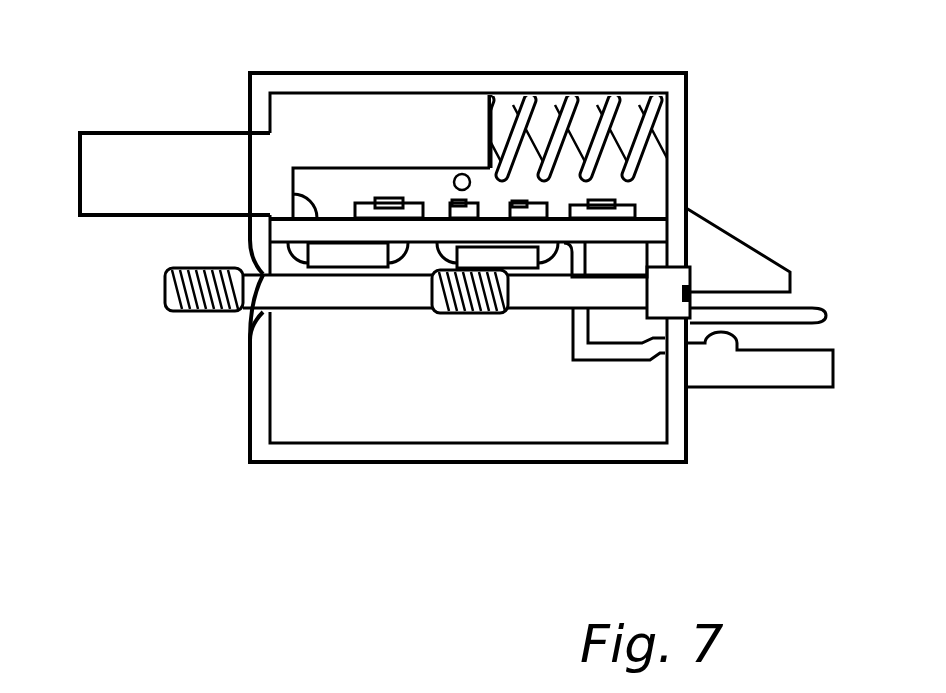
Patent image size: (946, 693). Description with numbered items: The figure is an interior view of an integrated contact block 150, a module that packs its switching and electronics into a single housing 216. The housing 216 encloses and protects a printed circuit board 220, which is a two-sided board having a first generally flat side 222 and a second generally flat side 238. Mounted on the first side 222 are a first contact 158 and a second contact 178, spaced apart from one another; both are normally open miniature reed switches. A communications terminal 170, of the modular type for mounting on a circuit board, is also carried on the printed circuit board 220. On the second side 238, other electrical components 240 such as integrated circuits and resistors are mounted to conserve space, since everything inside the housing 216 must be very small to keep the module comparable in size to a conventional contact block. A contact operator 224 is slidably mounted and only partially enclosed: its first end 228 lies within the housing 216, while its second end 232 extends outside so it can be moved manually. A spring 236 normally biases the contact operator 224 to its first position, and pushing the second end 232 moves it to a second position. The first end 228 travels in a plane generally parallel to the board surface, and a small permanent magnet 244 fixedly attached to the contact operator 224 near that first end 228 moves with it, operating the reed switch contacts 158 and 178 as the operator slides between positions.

The integrated contact block 150 is at (338, 463).
The first contact 158 is at (452, 209).
The communications terminal 170 is at (818, 316).
The second contact 178 is at (585, 257).
The housing 216 is at (517, 453).
The printed circuit board 220 is at (652, 222).
The first generally flat side 222 is at (293, 190).
The contact operator 224 is at (149, 133).
The first end 228 is at (488, 123).
The second end 232 is at (78, 187).
The spring 236 is at (612, 106).
The second generally flat side 238 is at (553, 310).
The other electrical components 240 is at (610, 200).
The permanent magnet 244 is at (458, 172).